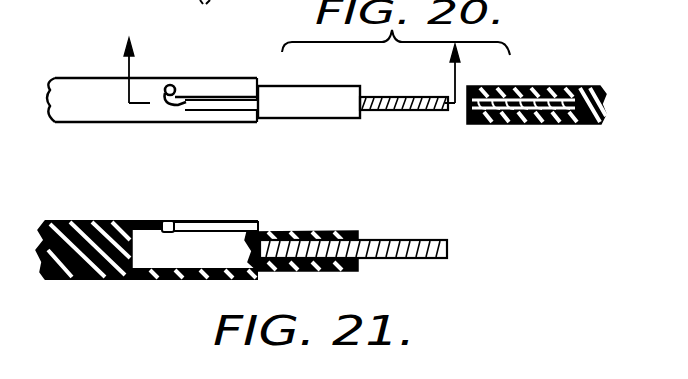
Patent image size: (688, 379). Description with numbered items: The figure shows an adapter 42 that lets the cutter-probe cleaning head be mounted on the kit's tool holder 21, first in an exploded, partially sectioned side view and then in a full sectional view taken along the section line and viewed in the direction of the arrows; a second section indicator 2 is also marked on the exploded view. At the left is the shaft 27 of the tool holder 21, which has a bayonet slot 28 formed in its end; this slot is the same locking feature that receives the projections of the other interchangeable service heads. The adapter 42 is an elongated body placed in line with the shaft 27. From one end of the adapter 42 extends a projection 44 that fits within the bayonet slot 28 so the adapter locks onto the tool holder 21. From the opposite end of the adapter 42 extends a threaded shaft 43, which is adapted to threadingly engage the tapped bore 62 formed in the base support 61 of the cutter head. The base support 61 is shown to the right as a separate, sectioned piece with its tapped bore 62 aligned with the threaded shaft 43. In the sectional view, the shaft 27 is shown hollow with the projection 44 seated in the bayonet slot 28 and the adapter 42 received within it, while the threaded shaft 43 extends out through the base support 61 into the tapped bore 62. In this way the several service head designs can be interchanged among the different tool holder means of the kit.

In FIG. 20, the shaft 27 is at (64, 124).
In FIG. 21, the shaft 27 is at (68, 281).
In FIG. 20, the projection 44 is at (174, 85).
In FIG. 21, the projection 44 is at (170, 220).
In FIG. 20, the bayonet slot 28 is at (200, 102).
In FIG. 20, the tool holder 21 is at (124, 78).
In FIG. 20, the adapter 42 is at (318, 114).
In FIG. 21, the adapter 42 is at (214, 236).
In FIG. 20, the threaded shaft 43 is at (412, 112).
In FIG. 21, the threaded shaft 43 is at (392, 260).
In FIG. 20, the section line 2 is at (441, 73).
In FIG. 20, the tapped bore 62 is at (528, 126).
In FIG. 21, the tapped bore 62 is at (301, 251).
In FIG. 20, the base support 61 is at (592, 126).